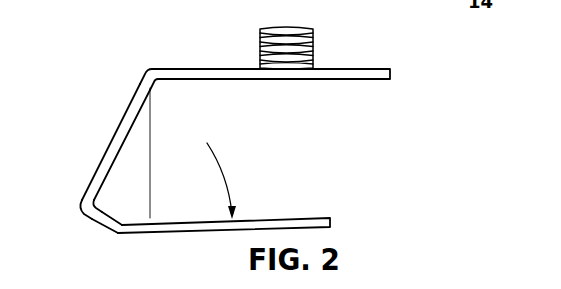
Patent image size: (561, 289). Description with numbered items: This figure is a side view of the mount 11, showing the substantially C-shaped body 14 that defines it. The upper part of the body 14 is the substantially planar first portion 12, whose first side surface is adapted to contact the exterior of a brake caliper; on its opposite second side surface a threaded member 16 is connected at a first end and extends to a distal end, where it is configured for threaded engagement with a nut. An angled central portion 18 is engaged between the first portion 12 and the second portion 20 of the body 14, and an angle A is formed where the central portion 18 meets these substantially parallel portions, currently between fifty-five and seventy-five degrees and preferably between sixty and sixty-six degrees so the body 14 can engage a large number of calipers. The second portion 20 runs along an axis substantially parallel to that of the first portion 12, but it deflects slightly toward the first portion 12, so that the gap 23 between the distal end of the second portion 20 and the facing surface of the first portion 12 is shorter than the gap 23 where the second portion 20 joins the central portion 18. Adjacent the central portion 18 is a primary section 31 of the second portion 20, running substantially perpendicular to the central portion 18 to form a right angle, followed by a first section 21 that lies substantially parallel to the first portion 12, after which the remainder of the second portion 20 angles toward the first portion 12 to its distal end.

The mount 11 is at (434, 119).
The first portion 12 is at (358, 68).
The body 14 is at (150, 69).
The threaded member 16 is at (260, 46).
The central portion 18 is at (103, 145).
The second portion 20 is at (313, 220).
The first section 21 is at (137, 229).
The gap 23 is at (330, 128).
The primary section 31 is at (102, 225).
The angle A is at (150, 90).